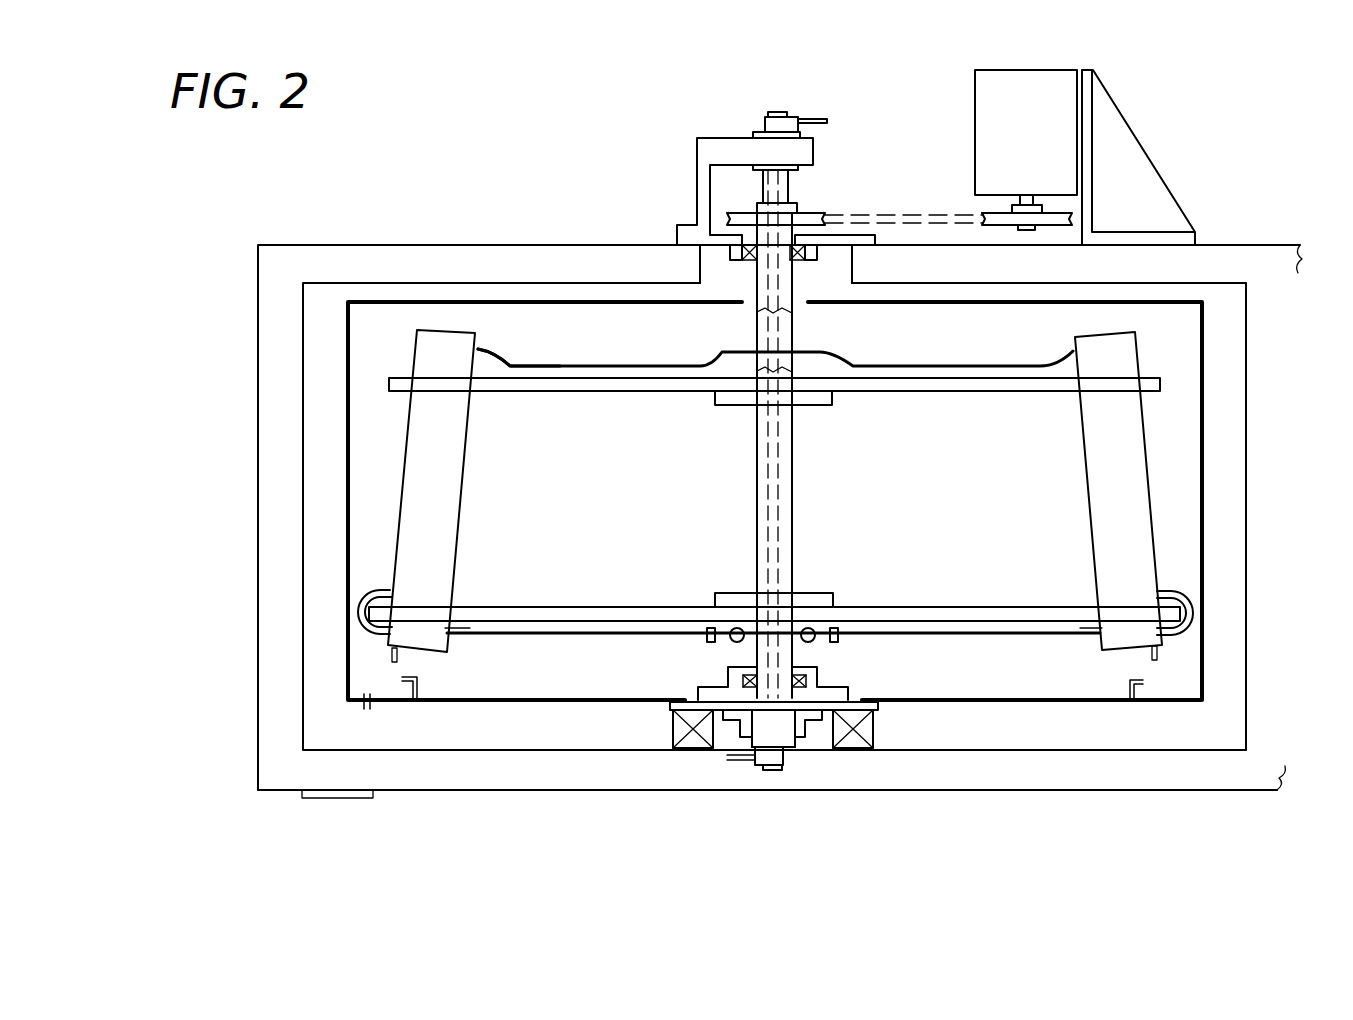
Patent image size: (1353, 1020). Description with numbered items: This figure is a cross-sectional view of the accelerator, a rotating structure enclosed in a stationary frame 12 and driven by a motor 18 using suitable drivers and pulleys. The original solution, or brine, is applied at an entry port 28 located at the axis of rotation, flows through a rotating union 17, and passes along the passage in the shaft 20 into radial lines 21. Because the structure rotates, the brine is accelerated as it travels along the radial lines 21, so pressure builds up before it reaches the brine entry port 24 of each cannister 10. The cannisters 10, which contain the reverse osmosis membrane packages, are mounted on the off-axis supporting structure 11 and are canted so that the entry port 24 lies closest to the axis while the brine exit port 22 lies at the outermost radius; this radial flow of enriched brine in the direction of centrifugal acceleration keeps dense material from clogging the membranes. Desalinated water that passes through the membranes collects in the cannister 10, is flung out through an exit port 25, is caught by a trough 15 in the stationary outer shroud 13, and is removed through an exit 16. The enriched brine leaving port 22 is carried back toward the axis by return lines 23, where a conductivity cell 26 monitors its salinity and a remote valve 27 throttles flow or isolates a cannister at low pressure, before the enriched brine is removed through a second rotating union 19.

The cannister 10 is at (457, 463).
The off-axis supporting structure 11 is at (600, 387).
The stationary frame 12 is at (275, 367).
The stationary outer shroud 13 is at (347, 420).
The trough 15 is at (397, 678).
The exit 16 is at (360, 707).
The rotating union 17 is at (770, 122).
The motor 18 is at (988, 152).
The rotating union 19 is at (777, 758).
The shaft 20 is at (773, 332).
The radial lines 21 is at (858, 365).
The brine exit port 22 is at (365, 592).
The return lines 23 is at (572, 634).
The brine entry port 24 is at (478, 348).
The exit port 25 is at (390, 655).
The conductivity cell 26 is at (705, 638).
The remote valve 27 is at (737, 643).
The entry port 28 is at (813, 115).